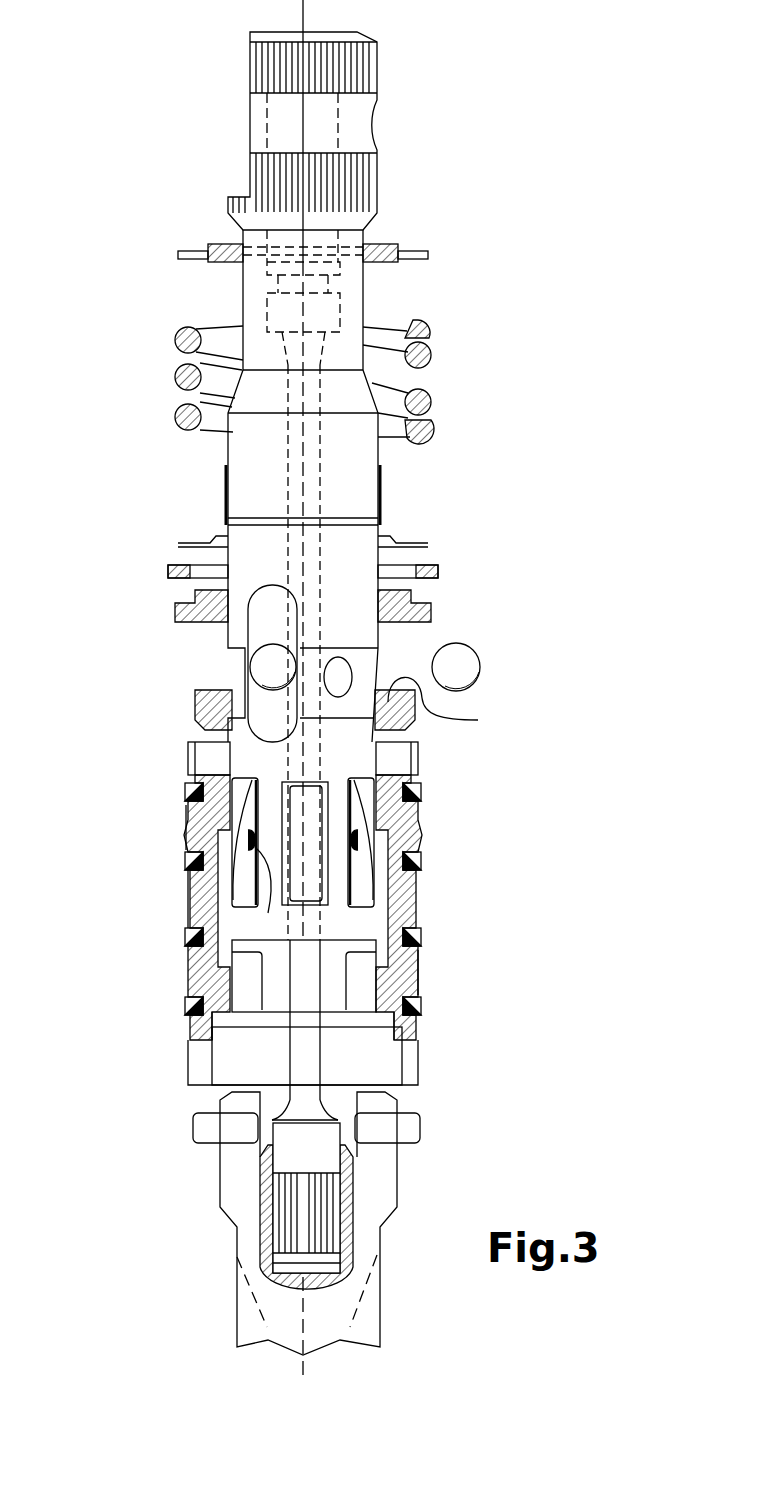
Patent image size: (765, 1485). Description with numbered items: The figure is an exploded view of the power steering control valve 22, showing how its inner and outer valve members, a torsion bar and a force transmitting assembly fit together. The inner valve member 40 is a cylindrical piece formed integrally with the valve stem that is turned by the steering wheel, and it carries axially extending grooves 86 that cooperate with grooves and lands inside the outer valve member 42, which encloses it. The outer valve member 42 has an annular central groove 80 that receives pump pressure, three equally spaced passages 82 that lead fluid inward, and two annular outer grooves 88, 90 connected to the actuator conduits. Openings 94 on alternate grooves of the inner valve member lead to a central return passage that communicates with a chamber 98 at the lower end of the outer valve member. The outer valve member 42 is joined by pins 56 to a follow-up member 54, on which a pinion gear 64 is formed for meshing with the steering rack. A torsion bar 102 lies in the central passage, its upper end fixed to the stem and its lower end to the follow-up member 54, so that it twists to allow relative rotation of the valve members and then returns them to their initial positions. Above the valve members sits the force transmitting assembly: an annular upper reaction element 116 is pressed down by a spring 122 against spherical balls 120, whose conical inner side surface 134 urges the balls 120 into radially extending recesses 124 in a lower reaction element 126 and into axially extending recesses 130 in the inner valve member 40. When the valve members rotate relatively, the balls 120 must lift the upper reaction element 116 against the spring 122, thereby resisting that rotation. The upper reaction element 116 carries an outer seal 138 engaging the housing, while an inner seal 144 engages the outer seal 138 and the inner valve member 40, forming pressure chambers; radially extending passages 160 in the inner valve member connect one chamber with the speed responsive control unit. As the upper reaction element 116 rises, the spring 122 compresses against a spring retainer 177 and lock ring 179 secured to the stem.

The power steering control valve 22 is at (547, 526).
The inner valve member 40 is at (374, 481).
The outer valve member 42 is at (425, 1022).
The follow-up member 54 is at (233, 1178).
The pins 56 is at (205, 1130).
The pinion gear 64 is at (247, 1322).
The annular central groove 80 is at (196, 880).
The passages 82 is at (205, 893).
The axially extending grooves 86 is at (242, 790).
The annular outer groove 88 is at (421, 822).
The annular outer groove 90 is at (419, 978).
The openings 94 is at (358, 843).
The chamber 98 is at (236, 1045).
The torsion bar 102 is at (325, 1148).
The upper reaction element 116 is at (440, 604).
The balls 120 is at (258, 667).
The spring 122 is at (431, 357).
The recesses 124 is at (455, 704).
The lower reaction element 126 is at (194, 706).
The recesses 130 is at (270, 613).
The annular inner side surface 134 is at (432, 592).
The outer seal 138 is at (170, 573).
The inner seal 144 is at (226, 540).
The radially extending passages 160 is at (340, 674).
The spring retainer 177 is at (208, 256).
The lock ring 179 is at (384, 243).